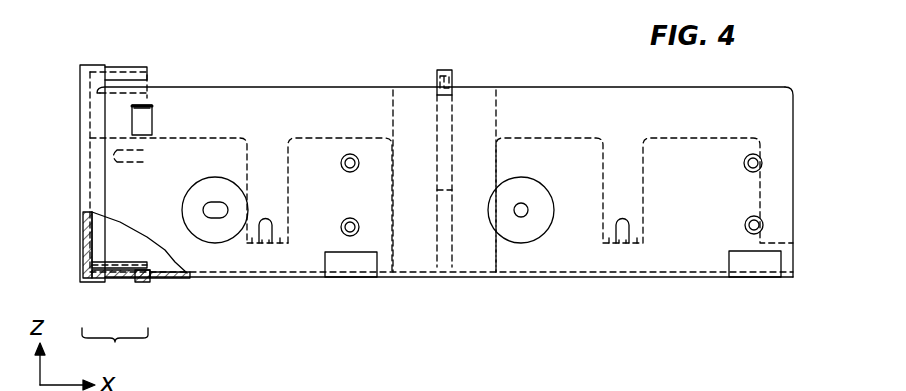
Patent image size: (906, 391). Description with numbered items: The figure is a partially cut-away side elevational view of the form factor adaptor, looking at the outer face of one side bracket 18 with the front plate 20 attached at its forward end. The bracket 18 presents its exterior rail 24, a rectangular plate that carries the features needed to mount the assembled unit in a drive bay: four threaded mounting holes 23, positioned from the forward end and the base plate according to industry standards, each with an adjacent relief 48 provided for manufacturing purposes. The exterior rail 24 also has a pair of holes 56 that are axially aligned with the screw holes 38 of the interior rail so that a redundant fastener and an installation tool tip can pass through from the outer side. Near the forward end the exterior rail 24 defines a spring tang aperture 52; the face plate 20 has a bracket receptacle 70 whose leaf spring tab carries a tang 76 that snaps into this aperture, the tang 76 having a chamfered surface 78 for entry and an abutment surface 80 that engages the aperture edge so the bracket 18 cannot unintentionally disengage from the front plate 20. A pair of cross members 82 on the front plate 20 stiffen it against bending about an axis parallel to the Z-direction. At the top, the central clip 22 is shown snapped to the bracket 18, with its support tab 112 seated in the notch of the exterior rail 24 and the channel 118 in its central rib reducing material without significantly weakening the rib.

The side bracket 18 is at (300, 100).
The front plate 20 is at (83, 173).
The central clip 22 is at (448, 62).
The threaded mounting holes 23 is at (342, 167).
The exterior rail 24 is at (790, 103).
The screw holes 38 is at (210, 205).
The relief 48 is at (347, 265).
The spring tang aperture 52 is at (152, 125).
The holes 56 is at (215, 238).
The bracket receptacle 70 is at (115, 350).
The tang 76 is at (140, 118).
The chamfered surface 78 is at (152, 277).
The abutment surface 80 is at (118, 275).
The cross member 82 is at (133, 68).
The support tab 112 is at (452, 90).
The channel 118 is at (437, 82).